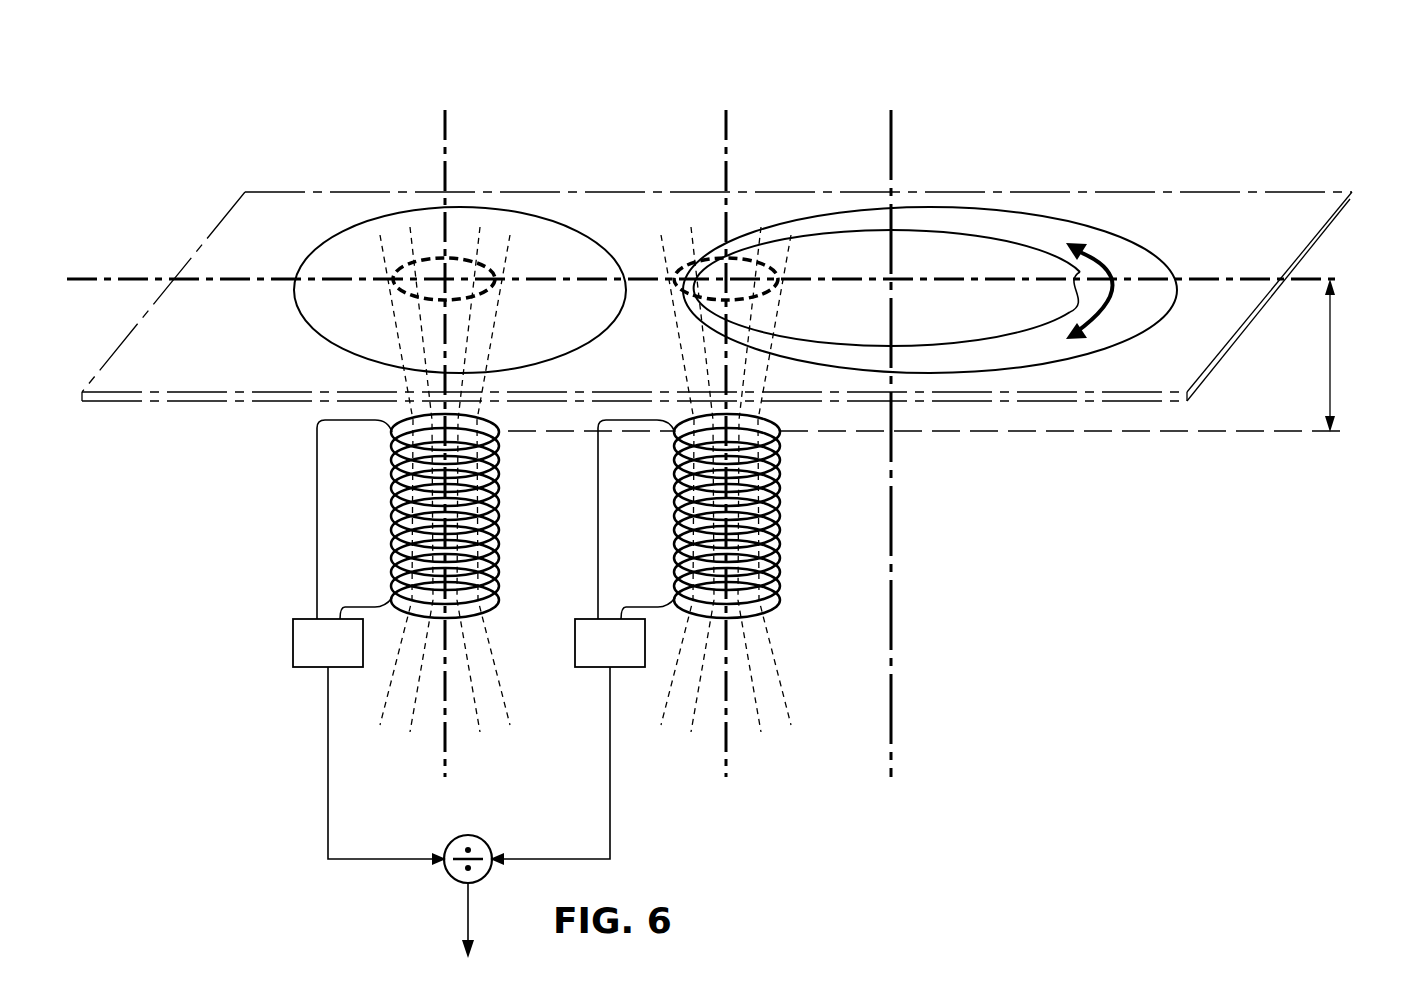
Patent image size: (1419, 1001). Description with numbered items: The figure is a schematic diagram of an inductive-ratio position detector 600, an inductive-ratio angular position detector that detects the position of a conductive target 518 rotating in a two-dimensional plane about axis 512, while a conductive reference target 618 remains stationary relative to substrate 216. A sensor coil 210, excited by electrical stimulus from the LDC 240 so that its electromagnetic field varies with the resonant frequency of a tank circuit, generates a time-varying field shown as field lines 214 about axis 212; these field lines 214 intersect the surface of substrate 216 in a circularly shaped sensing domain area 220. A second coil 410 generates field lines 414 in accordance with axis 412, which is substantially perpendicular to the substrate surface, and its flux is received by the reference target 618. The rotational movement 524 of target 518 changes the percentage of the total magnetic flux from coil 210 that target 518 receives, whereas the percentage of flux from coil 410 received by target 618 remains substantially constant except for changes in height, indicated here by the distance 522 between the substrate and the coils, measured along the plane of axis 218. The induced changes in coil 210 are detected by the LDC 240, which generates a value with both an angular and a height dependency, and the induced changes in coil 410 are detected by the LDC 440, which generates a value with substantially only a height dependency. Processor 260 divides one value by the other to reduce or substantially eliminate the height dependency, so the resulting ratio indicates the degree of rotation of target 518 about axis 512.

The inductive-ratio position detector 600 is at (512, 90).
The substrate 216 is at (567, 190).
The axis 218 is at (82, 276).
The distance between plate and coils 522 is at (1335, 335).
The axis 412 is at (443, 125).
The axis of second coil 212 is at (729, 122).
The axis 512 is at (894, 122).
The target 618 is at (330, 255).
The field lines 414 is at (487, 328).
The coil 410 is at (493, 605).
The LDC 440 is at (292, 645).
The target 518 is at (1105, 243).
The sensing domain area 220 is at (762, 297).
The rotational movement 524 is at (1125, 278).
The field lines 214 is at (685, 345).
The coil 210 is at (778, 605).
The LDC 240 is at (582, 618).
The processor 260 is at (485, 846).